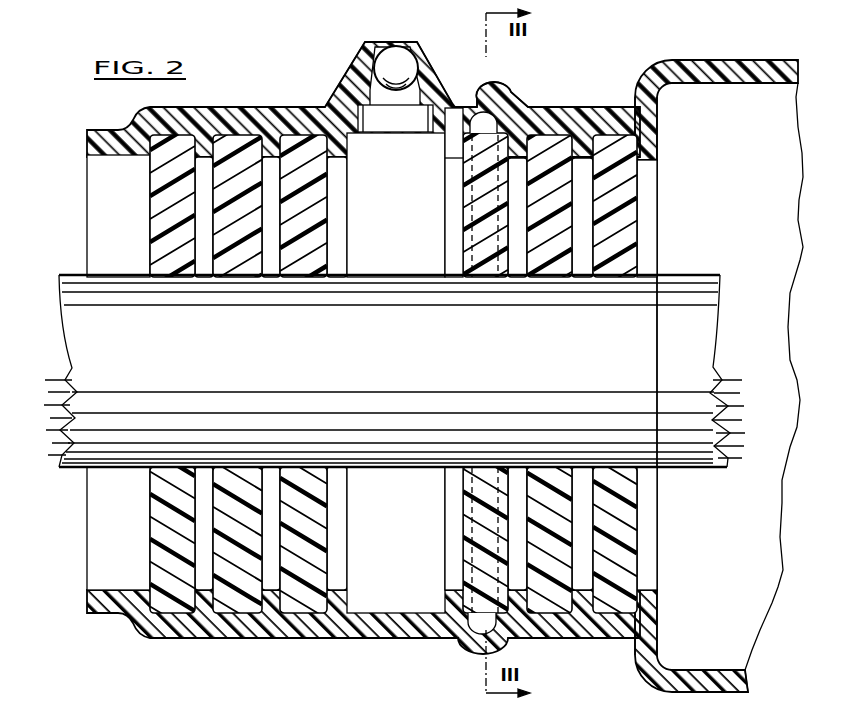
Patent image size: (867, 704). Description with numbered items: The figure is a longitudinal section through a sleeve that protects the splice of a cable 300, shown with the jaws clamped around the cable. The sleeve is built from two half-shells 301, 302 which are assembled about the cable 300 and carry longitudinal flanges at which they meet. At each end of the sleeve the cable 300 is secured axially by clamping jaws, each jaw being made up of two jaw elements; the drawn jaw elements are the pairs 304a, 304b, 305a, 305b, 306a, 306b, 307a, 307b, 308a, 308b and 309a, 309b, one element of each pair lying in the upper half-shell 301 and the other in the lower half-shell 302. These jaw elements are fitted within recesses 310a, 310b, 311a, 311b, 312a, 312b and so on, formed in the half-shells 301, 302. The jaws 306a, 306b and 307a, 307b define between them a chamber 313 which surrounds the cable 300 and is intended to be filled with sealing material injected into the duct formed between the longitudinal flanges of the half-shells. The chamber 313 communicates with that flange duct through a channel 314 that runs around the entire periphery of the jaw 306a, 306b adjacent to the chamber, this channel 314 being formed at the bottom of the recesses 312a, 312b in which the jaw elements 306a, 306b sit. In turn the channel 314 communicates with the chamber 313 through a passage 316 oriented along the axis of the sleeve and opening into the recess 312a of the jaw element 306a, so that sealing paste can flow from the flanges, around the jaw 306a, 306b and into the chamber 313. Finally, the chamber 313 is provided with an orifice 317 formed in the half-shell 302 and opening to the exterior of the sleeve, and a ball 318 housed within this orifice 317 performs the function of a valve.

The cable 300 is at (727, 417).
The half-shell 301 is at (367, 634).
The half-shell 302 is at (704, 48).
The jaw element 304a is at (645, 232).
The jaw element 304b is at (645, 512).
The jaw element 305a is at (637, 182).
The jaw element 305b is at (555, 547).
The jaw element 306a is at (480, 192).
The jaw element 306b is at (477, 515).
The jaw element 307a is at (310, 248).
The jaw element 307b is at (330, 508).
The jaw element 308a is at (242, 200).
The jaw element 308b is at (238, 577).
The jaw element 309a is at (160, 227).
The jaw element 309b is at (163, 510).
The recess 310a is at (625, 128).
The recess 310b is at (657, 632).
The recess 311a is at (550, 143).
The recess 311b is at (560, 617).
The recess 312a is at (512, 100).
The recess 312b is at (500, 613).
The chamber 313 is at (403, 585).
The channel 314 is at (480, 120).
The passage 316 is at (448, 140).
The orifice 317 is at (352, 90).
The ball 318 is at (395, 68).